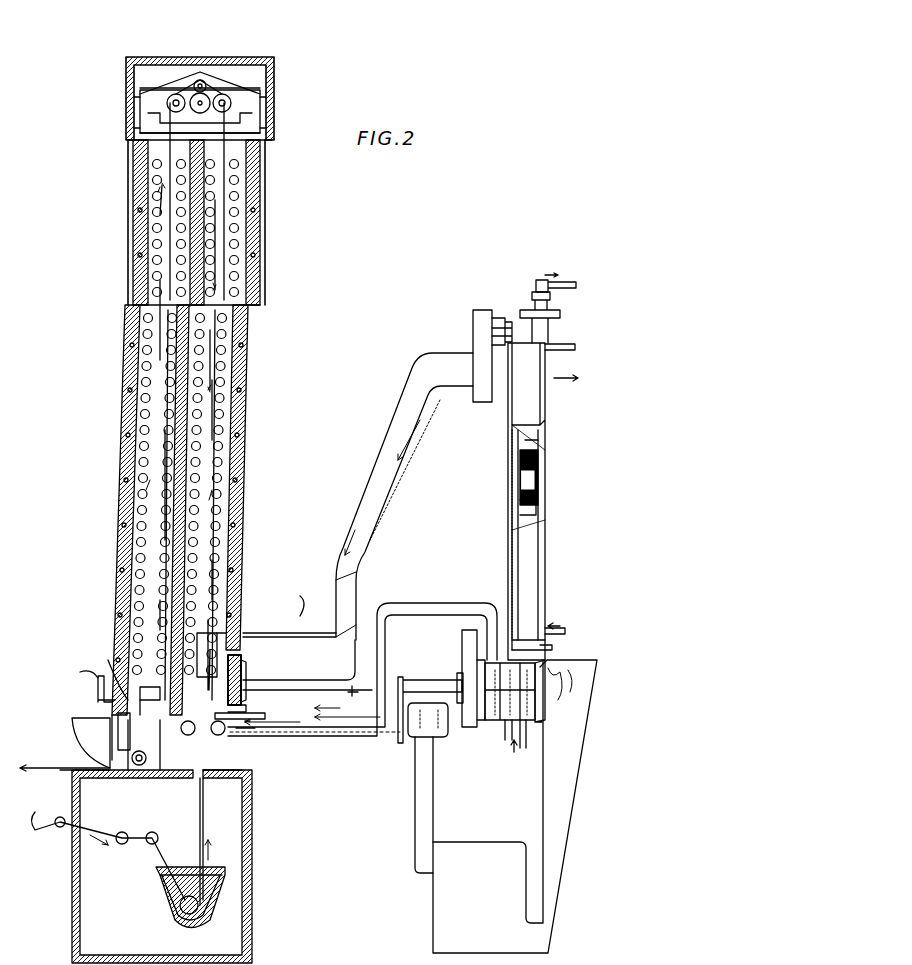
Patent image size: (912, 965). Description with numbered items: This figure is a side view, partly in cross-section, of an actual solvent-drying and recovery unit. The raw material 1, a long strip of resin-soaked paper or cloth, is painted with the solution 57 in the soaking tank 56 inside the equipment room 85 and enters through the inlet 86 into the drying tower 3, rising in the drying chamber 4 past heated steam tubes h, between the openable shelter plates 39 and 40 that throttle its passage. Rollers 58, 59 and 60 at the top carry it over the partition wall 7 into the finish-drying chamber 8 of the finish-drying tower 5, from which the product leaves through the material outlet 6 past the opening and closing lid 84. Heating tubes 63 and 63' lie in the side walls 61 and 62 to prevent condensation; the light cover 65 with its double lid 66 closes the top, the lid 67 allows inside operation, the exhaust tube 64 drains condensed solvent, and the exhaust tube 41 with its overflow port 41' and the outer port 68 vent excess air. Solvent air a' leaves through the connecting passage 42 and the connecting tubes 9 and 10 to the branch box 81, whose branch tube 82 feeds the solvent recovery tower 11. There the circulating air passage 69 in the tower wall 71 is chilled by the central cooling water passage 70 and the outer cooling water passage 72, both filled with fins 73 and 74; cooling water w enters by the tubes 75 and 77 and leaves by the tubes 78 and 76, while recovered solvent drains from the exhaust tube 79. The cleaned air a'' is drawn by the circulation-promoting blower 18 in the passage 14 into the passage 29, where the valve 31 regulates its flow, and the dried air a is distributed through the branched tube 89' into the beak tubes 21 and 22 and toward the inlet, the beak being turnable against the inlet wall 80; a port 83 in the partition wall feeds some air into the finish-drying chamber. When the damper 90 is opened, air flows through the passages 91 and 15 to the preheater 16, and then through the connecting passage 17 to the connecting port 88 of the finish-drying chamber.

The raw material 1 is at (35, 814).
The drying tower 3 is at (248, 430).
The drying chamber 4 is at (232, 372).
The finish-drying tower 5 is at (126, 400).
The material outlet 6 is at (80, 768).
The partition wall 7 is at (186, 406).
The finish-drying chamber 8 is at (130, 350).
The connecting tube 9 is at (302, 605).
The connecting tube 10 is at (360, 510).
The solvent recovery tower 11 is at (42, 768).
The passage 14 is at (495, 722).
The passage 15 is at (590, 788).
The preheater 16 is at (488, 912).
The connecting passage 17 is at (318, 692).
The circulation-promoting blower 18 is at (492, 725).
The beak tube 21 is at (188, 735).
The beak tube 22 is at (218, 735).
The passage 29 is at (428, 603).
The valve 31 is at (357, 697).
The shelter plate 39 is at (200, 695).
The shelter plate 40 is at (240, 697).
The exhaust tube 41 is at (87, 692).
The overflow port 41' is at (139, 718).
The connecting passage 42 is at (230, 623).
The soaking tank 56 is at (166, 902).
The solution 57 is at (204, 900).
The roller 58 is at (224, 94).
The roller 59 is at (201, 82).
The roller 60 is at (176, 94).
The side wall 61 is at (245, 536).
The side wall 62 is at (125, 532).
The heating tube 63 is at (219, 355).
The heating tube 63' is at (103, 419).
The exhaust tube 64 is at (266, 708).
The cover 65 is at (252, 82).
The lid 66 is at (142, 58).
The lid 67 is at (244, 665).
The outer port 68 is at (79, 673).
The circulating air passage 69 is at (542, 466).
The central cooling water passage 70 is at (540, 456).
The tower wall 71 is at (548, 436).
The outer cooling water passage 72 is at (540, 496).
The fin 73 is at (515, 473).
The fin 74 is at (520, 496).
The cooling water tube 75 is at (566, 630).
The cooling water tube 76 is at (575, 353).
The cooling water tube 77 is at (526, 750).
The cooling water tube 78 is at (536, 298).
The exhaust tube 79 is at (516, 754).
The inlet wall 80 is at (565, 282).
The branch box 81 is at (473, 340).
The branch tube 82 is at (498, 318).
The port 83 is at (152, 745).
The opening and closing lid 84 is at (108, 742).
The equipment room 85 is at (252, 834).
The inlet 86 is at (207, 780).
The connecting port 88 is at (118, 690).
The branched tube 89' is at (258, 742).
The damper 90 is at (552, 652).
The passage 91 is at (540, 722).
The dried air a is at (210, 438).
The solvent air a' is at (309, 541).
The recovered air a'' is at (560, 678).
The heated steam tube h is at (165, 472).
The cooling water w is at (542, 512).